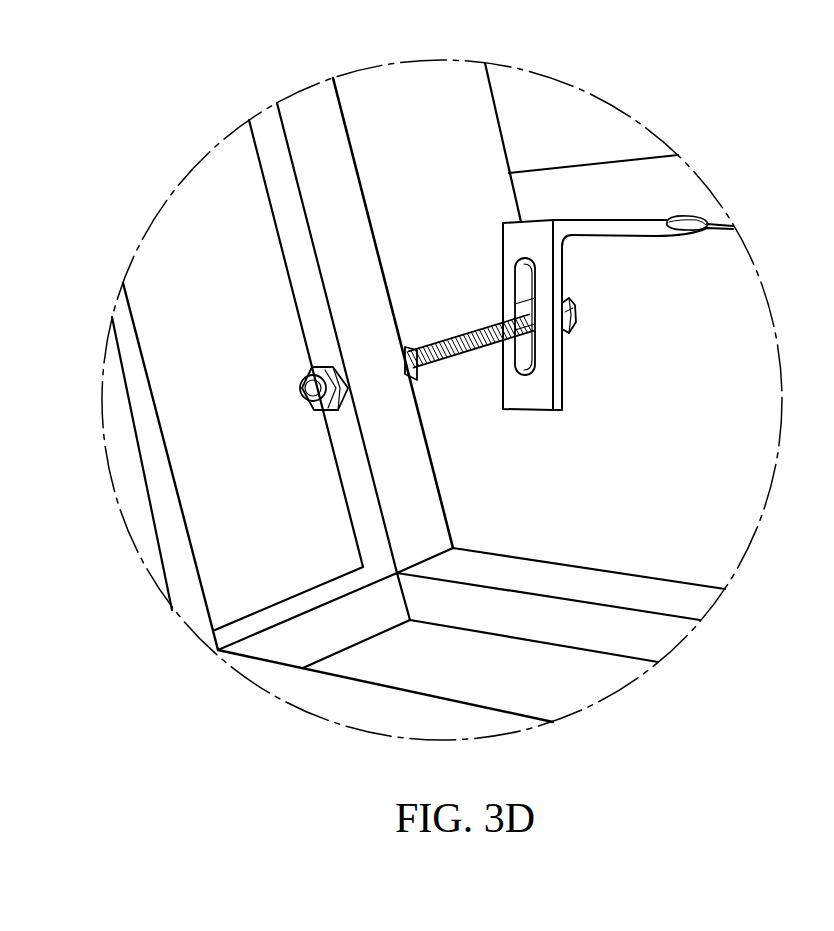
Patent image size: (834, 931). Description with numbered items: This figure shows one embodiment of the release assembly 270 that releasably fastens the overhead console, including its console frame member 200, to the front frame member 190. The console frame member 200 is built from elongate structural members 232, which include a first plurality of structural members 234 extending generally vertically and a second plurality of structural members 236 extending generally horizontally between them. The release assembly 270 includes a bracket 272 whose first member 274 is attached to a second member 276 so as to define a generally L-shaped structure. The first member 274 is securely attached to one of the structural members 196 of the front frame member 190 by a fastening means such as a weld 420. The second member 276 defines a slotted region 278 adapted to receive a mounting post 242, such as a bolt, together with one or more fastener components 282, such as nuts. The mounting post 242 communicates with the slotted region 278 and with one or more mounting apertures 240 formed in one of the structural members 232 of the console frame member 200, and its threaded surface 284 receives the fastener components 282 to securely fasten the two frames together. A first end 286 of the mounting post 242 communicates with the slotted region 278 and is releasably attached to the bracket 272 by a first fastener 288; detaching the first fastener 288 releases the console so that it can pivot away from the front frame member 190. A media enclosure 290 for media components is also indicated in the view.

The front frame member 190 is at (638, 172).
The structural members 196 is at (678, 198).
The console frame member 200 is at (317, 128).
The structural members 232 is at (333, 275).
The first plurality of structural members 234 is at (325, 230).
The second plurality of structural members 236 is at (317, 633).
The mounting apertures 240 is at (476, 364).
The mounting post 242 is at (472, 332).
The release assembly 270 is at (624, 350).
The bracket 272 is at (624, 319).
The first member 274 is at (637, 235).
The second member 276 is at (560, 265).
The slotted region 278 is at (522, 355).
The fastener components 282 is at (340, 400).
The threaded surface 284 is at (523, 313).
The first end 286 is at (445, 340).
The first fastener 288 is at (570, 317).
The media enclosure 290 is at (203, 190).
The weld 420 is at (667, 217).